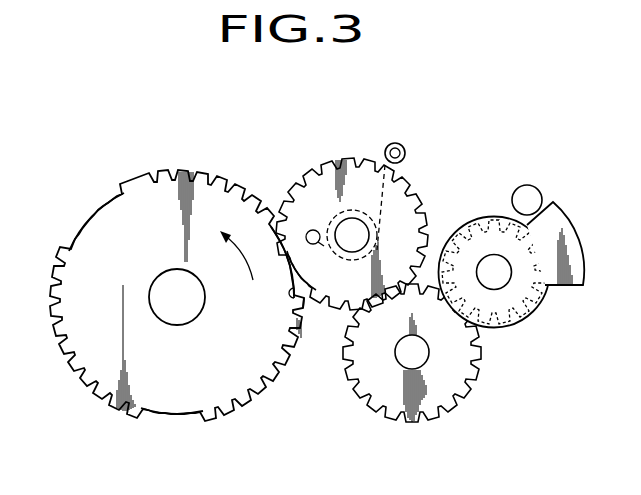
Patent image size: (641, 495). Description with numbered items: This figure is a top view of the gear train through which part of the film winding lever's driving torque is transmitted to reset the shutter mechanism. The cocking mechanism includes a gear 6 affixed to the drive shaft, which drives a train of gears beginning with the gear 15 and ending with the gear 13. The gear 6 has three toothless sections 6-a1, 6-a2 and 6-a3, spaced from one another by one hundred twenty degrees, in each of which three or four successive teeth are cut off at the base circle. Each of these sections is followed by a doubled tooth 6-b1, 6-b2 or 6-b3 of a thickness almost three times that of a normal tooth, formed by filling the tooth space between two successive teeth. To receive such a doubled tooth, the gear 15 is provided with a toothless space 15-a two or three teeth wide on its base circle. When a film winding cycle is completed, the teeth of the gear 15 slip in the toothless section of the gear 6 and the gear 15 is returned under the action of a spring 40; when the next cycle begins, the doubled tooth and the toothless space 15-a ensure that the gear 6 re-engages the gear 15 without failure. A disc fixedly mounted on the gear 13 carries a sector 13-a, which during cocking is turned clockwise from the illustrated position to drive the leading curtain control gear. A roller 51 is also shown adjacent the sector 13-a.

The gear 6 is at (218, 385).
The toothless section 6-a1 is at (288, 297).
The toothless section 6-a2 is at (170, 416).
The toothless section 6-a3 is at (90, 218).
The doubled tooth 6-b1 is at (296, 332).
The doubled tooth 6-b2 is at (110, 408).
The doubled tooth 6-b3 is at (128, 174).
The gear 15 is at (312, 197).
The toothless space 15-a is at (300, 280).
The spring 40 is at (388, 152).
The gear 13 is at (523, 315).
The sector 13-a is at (555, 222).
The cam follower roller 51 is at (526, 185).